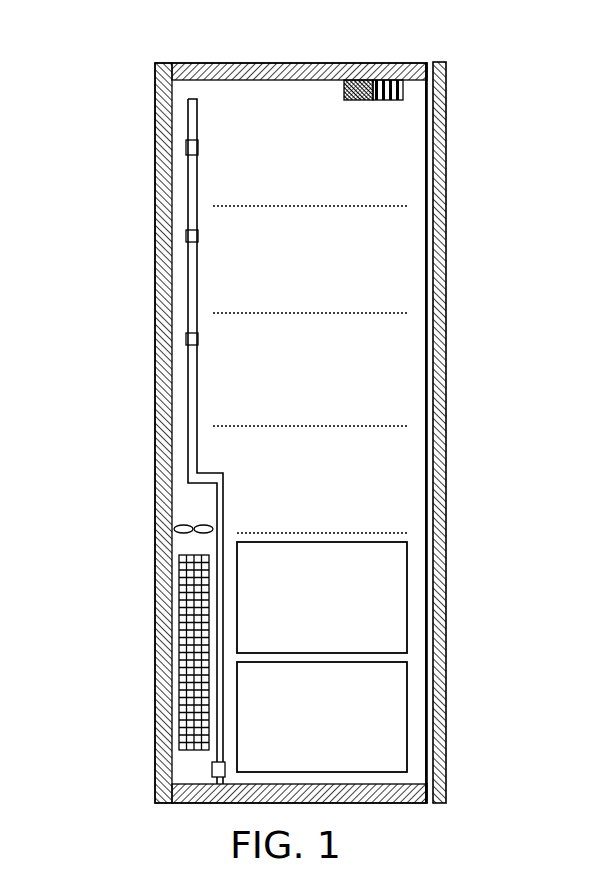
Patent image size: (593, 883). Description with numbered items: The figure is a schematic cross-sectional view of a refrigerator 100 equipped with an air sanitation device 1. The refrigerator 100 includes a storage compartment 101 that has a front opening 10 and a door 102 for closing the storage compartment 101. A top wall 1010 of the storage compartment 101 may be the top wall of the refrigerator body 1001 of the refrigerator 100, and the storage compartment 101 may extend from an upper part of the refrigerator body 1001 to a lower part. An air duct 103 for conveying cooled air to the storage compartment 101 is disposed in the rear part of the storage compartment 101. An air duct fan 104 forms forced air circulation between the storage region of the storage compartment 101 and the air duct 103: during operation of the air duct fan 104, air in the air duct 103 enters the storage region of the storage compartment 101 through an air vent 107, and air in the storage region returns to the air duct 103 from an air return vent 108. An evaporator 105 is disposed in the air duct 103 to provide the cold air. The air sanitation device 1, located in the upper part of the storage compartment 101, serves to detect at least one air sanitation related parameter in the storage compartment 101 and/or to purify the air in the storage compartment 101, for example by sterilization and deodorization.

The refrigerator 100 is at (282, 416).
The front opening 10 is at (273, 416).
The top wall 1010 is at (250, 63).
The refrigerator body 1001 is at (157, 302).
The storage compartment 101 is at (342, 289).
The door 102 is at (447, 230).
The air sanitation device 1 is at (343, 99).
The air duct 103 is at (181, 441).
The air vent 107 is at (198, 146).
The air return vent 108 is at (212, 768).
The air duct fan 104 is at (174, 528).
The evaporator 105 is at (185, 605).